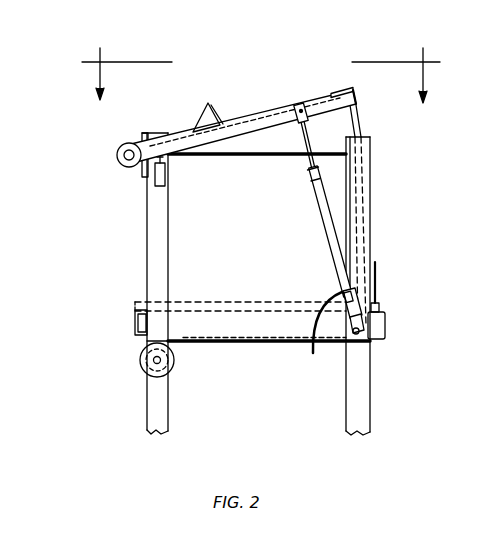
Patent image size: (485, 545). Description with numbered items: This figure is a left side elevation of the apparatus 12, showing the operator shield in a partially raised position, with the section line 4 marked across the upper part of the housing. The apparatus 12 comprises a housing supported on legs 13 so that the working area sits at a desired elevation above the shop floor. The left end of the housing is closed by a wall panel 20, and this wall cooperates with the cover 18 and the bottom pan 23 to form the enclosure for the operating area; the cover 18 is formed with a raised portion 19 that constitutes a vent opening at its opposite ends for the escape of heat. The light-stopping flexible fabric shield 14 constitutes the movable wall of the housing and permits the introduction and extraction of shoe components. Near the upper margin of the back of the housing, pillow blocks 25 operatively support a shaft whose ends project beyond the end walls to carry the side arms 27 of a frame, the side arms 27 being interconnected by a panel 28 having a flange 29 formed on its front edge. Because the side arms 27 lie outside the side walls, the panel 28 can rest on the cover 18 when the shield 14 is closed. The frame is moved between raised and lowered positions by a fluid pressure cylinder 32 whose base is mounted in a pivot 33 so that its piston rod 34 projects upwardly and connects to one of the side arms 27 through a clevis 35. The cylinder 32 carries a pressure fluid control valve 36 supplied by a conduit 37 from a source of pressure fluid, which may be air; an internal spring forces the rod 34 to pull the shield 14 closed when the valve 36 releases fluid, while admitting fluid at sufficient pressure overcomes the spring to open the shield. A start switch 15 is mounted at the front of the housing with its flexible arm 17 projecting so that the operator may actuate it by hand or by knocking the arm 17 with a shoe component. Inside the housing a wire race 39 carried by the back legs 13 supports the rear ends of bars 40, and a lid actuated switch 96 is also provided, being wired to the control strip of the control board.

The section line 4- 4 is at (262, 74).
The apparatus 12 is at (122, 240).
The legs 13 is at (152, 416).
The shield 14 is at (360, 123).
The start switch 15 is at (388, 327).
The flexible arm 17 is at (382, 278).
The cover 18 is at (158, 131).
The raised portion 19 is at (197, 107).
The wall panel 20 is at (245, 237).
The bottom pan 23 is at (220, 346).
The pillow blocks 25 is at (127, 166).
The side arms 27 is at (262, 108).
The panel 28 is at (331, 90).
The flange 29 is at (356, 92).
The fluid pressure cylinder 32 is at (323, 218).
The pivot 33 is at (374, 344).
The piston rod 34 is at (307, 158).
The clevis 35 is at (307, 110).
The pressure fluid control valve 36 is at (345, 292).
The conduit 37 is at (312, 349).
The wire race 39 is at (135, 322).
The bars 40 is at (233, 302).
The lid actuated switch 96 is at (166, 173).